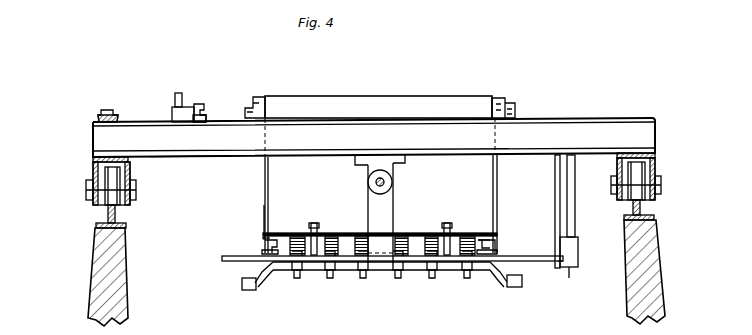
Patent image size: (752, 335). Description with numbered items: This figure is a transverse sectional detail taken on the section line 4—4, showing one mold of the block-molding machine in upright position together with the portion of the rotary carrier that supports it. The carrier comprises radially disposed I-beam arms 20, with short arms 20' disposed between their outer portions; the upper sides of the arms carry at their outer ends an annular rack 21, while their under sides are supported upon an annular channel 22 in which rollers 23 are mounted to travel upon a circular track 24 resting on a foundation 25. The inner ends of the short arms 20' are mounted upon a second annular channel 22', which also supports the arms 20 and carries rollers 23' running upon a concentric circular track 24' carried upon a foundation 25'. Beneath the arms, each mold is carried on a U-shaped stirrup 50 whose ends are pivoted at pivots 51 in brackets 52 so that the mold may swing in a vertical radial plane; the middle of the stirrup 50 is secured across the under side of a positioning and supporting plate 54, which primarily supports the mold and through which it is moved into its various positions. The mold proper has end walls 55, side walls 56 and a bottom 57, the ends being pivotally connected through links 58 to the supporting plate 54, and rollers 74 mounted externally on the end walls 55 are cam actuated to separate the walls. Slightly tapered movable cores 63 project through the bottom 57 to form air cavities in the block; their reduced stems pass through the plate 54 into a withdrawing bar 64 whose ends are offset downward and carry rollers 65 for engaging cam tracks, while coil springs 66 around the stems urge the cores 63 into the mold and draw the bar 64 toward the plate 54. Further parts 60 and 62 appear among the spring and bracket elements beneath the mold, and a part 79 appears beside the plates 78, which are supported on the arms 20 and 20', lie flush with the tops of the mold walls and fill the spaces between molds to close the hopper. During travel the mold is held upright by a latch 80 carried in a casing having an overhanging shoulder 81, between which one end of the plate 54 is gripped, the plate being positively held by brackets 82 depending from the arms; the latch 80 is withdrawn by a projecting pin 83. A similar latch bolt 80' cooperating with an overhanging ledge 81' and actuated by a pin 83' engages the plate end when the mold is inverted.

The section line 4— 4 is at (244, 112).
The arm 20 is at (190, 169).
The short arm 20' is at (369, 132).
The annular rack 21 is at (99, 112).
The annular channel 22 is at (88, 181).
The annular channel 22' is at (657, 170).
The roller 23 is at (93, 186).
The roller 23' is at (654, 180).
The circular track 24 is at (88, 216).
The circular track 24' is at (652, 210).
The foundation 25 is at (89, 277).
The foundation 25' is at (656, 272).
The U-shaped stirrup 50 is at (393, 219).
The pivot 51 is at (390, 190).
The bracket 52 is at (397, 168).
The positioning and supporting plate 54 is at (228, 259).
The end wall 55 is at (265, 176).
The side wall 56 is at (443, 104).
The bottom 57 is at (265, 234).
The link 58 is at (262, 240).
The spring bolt 60 is at (318, 234).
The bracket 62 is at (262, 246).
The movable core 63 is at (366, 278).
The withdrawing bar 64 is at (383, 272).
The roller 65 is at (248, 290).
The coil spring 66 is at (484, 240).
The roller 74 is at (516, 104).
The plate 78 is at (257, 97).
The bolt 79 is at (494, 101).
The latch 80 is at (554, 285).
The latch bolt 80' is at (213, 109).
The overhanging shoulder 81 is at (581, 252).
The overhanging ledge or shoulder 81' is at (198, 101).
The bracket 82 is at (576, 201).
The projecting pin 83 is at (579, 286).
The pin 83' is at (171, 100).